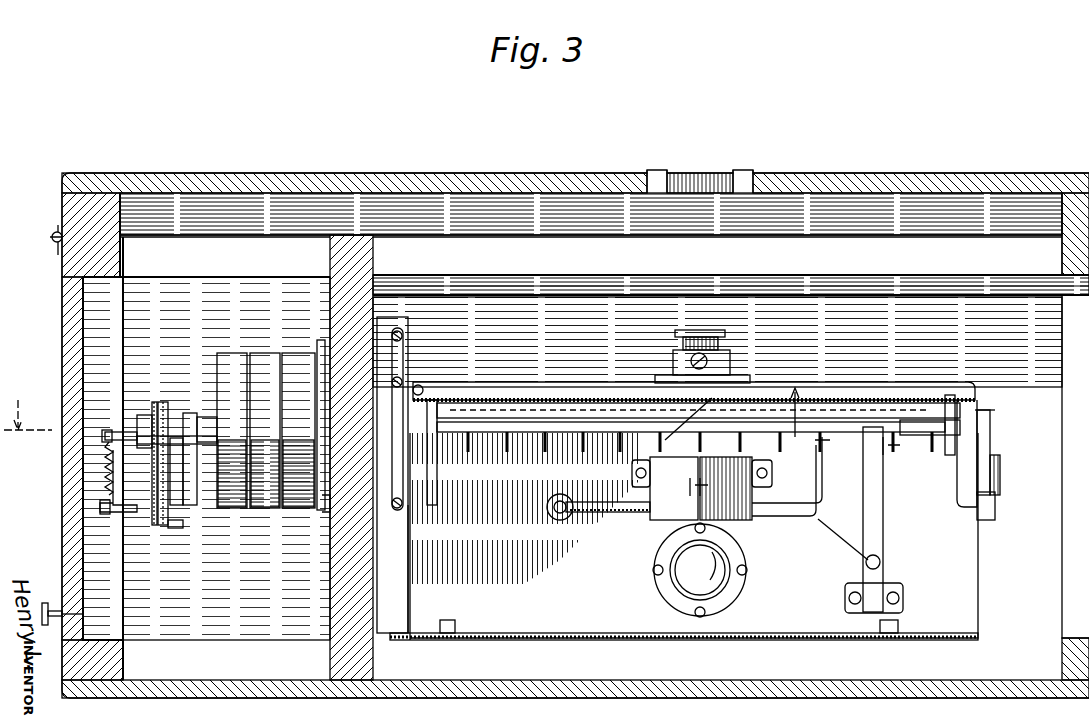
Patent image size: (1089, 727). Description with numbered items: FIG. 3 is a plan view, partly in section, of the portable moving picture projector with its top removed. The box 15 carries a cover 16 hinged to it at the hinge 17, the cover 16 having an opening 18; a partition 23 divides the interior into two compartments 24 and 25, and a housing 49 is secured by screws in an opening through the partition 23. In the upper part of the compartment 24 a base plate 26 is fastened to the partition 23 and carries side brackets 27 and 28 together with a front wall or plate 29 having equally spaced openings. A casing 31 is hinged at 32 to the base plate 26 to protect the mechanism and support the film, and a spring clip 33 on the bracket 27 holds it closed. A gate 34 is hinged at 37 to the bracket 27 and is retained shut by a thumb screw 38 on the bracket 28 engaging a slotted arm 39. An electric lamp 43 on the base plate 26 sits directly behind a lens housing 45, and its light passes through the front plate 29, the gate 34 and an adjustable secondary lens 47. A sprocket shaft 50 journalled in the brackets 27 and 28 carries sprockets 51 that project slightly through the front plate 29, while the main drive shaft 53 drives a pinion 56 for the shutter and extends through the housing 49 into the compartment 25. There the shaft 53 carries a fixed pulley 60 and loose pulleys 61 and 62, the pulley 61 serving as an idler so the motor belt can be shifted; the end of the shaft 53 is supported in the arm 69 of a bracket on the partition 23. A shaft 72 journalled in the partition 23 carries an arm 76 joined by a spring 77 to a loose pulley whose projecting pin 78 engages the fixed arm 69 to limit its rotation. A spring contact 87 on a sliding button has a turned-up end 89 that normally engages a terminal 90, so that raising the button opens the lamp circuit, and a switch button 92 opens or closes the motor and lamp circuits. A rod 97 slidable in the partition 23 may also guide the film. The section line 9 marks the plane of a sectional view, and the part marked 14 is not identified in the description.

The cover 16 is at (203, 183).
The opening 18 is at (706, 177).
The hinge 17 is at (50, 238).
The box 15 is at (66, 290).
The compartment 25 is at (253, 262).
The partition 23 is at (355, 290).
The compartment 24 is at (660, 262).
The rod 97 is at (877, 262).
The secondary lens 47 is at (730, 343).
The gate hinge 37 is at (450, 374).
The gate 34 is at (694, 389).
The main drive shaft 53 is at (563, 430).
The sprockets 51 is at (606, 420).
The pinion 56 is at (691, 407).
The section line 9- 9 is at (402, 396).
The front wall or plate 29 is at (915, 412).
The side bracket 28 is at (968, 420).
The slotted arm 39 is at (985, 442).
The thumb screw 38 is at (1000, 462).
The pulley 60 is at (232, 430).
The pulley 61 is at (265, 430).
The pulley 62 is at (298, 430).
The arm 69 is at (190, 460).
The spring 77 is at (100, 464).
The arm 76 is at (100, 508).
The shaft 72 is at (203, 495).
The laterally projecting pin 78 is at (183, 543).
The gear wheel 14 is at (170, 565).
The housing 49 is at (325, 512).
The switch button 92 is at (100, 603).
The side bracket 27 is at (407, 475).
The sprocket shaft 50 is at (561, 435).
The lens housing 45 is at (702, 488).
The spring clip 33 is at (400, 505).
The electric lamp 43 is at (700, 570).
The base plate 26 is at (990, 572).
The casing hinge 32 is at (455, 627).
The casing 31 is at (616, 640).
The turned-up portion of contact 89 is at (880, 440).
The terminal 90 is at (862, 446).
The spring contact 87 is at (875, 513).